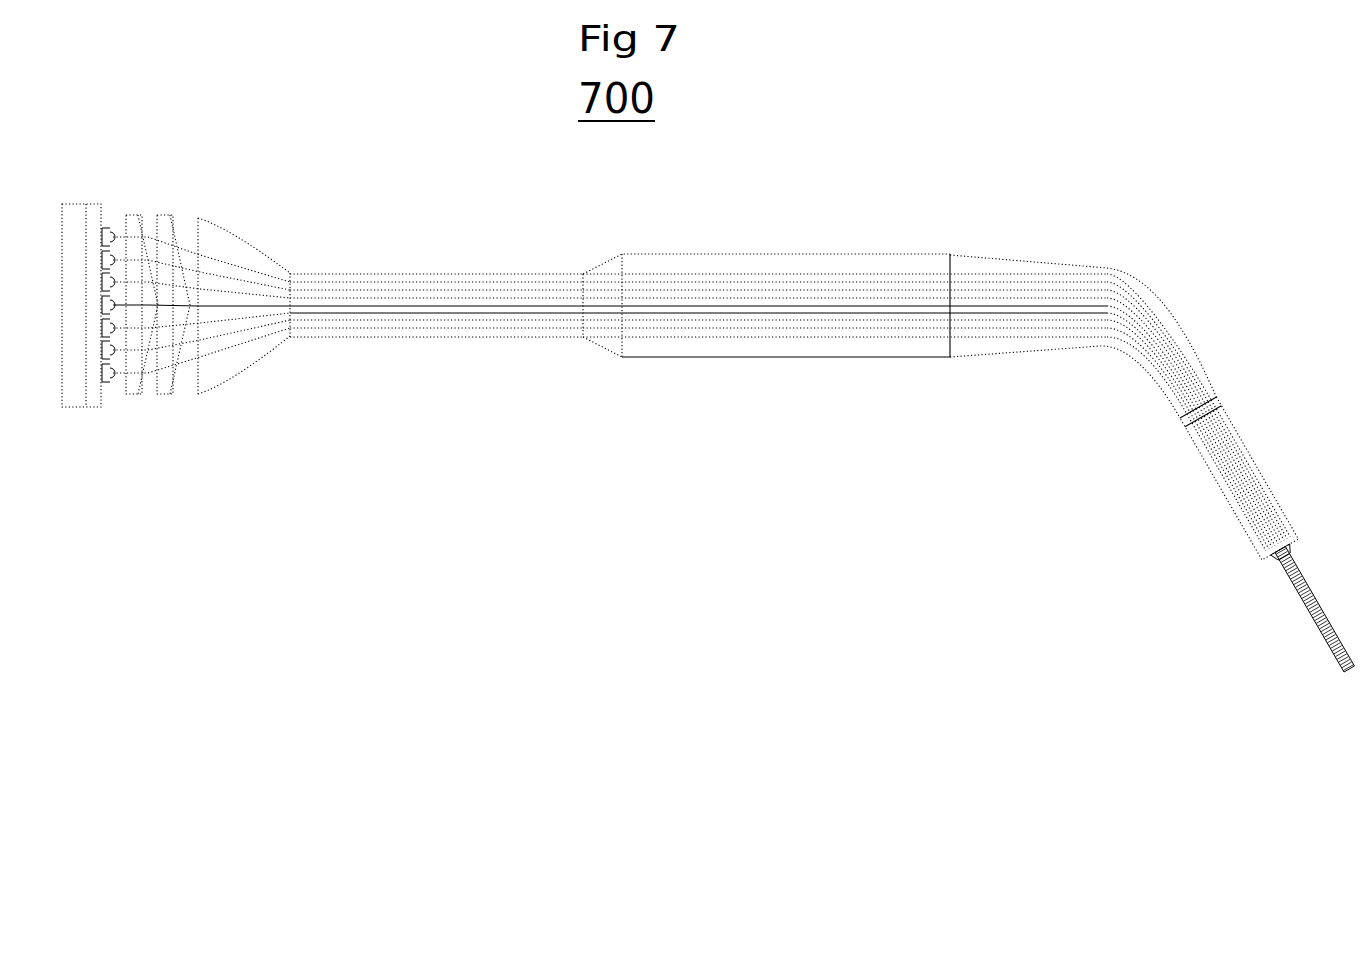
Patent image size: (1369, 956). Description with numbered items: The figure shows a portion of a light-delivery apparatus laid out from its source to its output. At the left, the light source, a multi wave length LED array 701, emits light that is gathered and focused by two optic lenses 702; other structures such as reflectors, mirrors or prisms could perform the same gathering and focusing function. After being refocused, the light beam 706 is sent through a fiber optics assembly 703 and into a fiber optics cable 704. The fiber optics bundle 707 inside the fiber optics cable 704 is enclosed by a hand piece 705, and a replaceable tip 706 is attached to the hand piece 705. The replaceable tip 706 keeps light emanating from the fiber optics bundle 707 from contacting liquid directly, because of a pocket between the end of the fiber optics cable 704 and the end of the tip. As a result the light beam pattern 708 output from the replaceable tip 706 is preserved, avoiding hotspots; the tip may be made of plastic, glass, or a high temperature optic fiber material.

The multi-wavelength LED array 701 is at (112, 393).
The optic lenses 702 is at (143, 210).
The fiber optics assembly 703 is at (263, 235).
The fiber optics cable 704 is at (438, 343).
The hand piece 705 is at (828, 242).
The light beam / replaceable tip 706 is at (522, 315).
The fiber optics bundle 707 is at (892, 328).
The light beam pattern 708 is at (1322, 652).